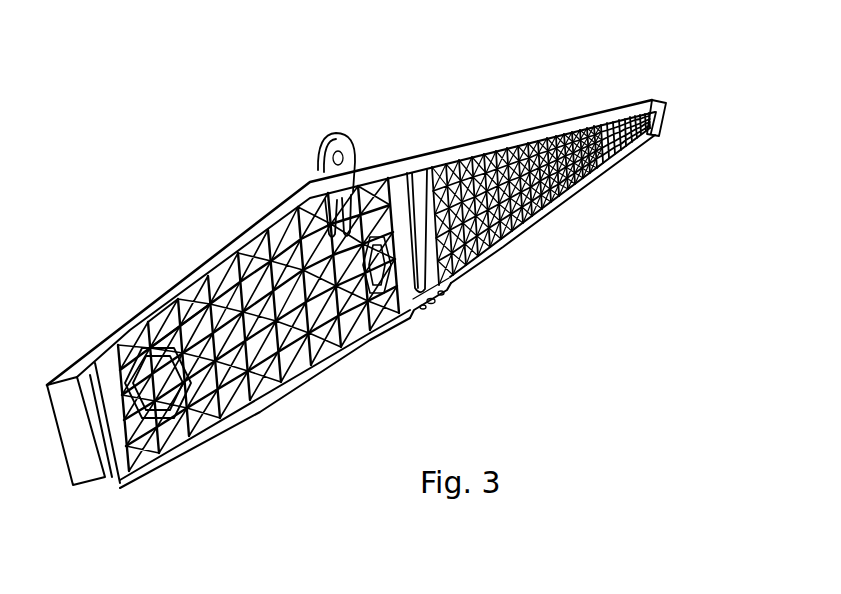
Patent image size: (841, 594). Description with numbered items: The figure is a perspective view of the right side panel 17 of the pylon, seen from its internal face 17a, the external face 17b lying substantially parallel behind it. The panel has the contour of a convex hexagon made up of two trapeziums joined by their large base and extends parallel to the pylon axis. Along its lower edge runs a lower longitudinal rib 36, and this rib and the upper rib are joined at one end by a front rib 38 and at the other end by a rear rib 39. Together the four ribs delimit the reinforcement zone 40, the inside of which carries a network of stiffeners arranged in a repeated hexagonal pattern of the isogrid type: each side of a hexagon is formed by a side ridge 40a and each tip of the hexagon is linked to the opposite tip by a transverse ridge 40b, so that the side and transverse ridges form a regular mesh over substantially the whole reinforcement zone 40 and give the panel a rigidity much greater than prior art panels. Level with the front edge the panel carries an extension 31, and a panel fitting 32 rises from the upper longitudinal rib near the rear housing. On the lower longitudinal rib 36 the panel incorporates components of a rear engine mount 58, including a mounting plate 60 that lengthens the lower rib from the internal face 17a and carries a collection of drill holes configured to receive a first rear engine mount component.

The side panel 17 is at (220, 193).
The internal face 17a is at (424, 158).
The external face 17b is at (397, 157).
The extension 31 is at (667, 108).
The panel fitting 32 is at (340, 142).
The lower longitudinal rib 36 is at (294, 401).
The front rib 38 is at (657, 134).
The rear rib 39 is at (103, 470).
The reinforcement zone 40 is at (564, 128).
The side ridge 40a is at (224, 403).
The transverse ridge 40b is at (168, 352).
The rear engine mount components 58 is at (430, 322).
The mounting plate 60 is at (445, 296).